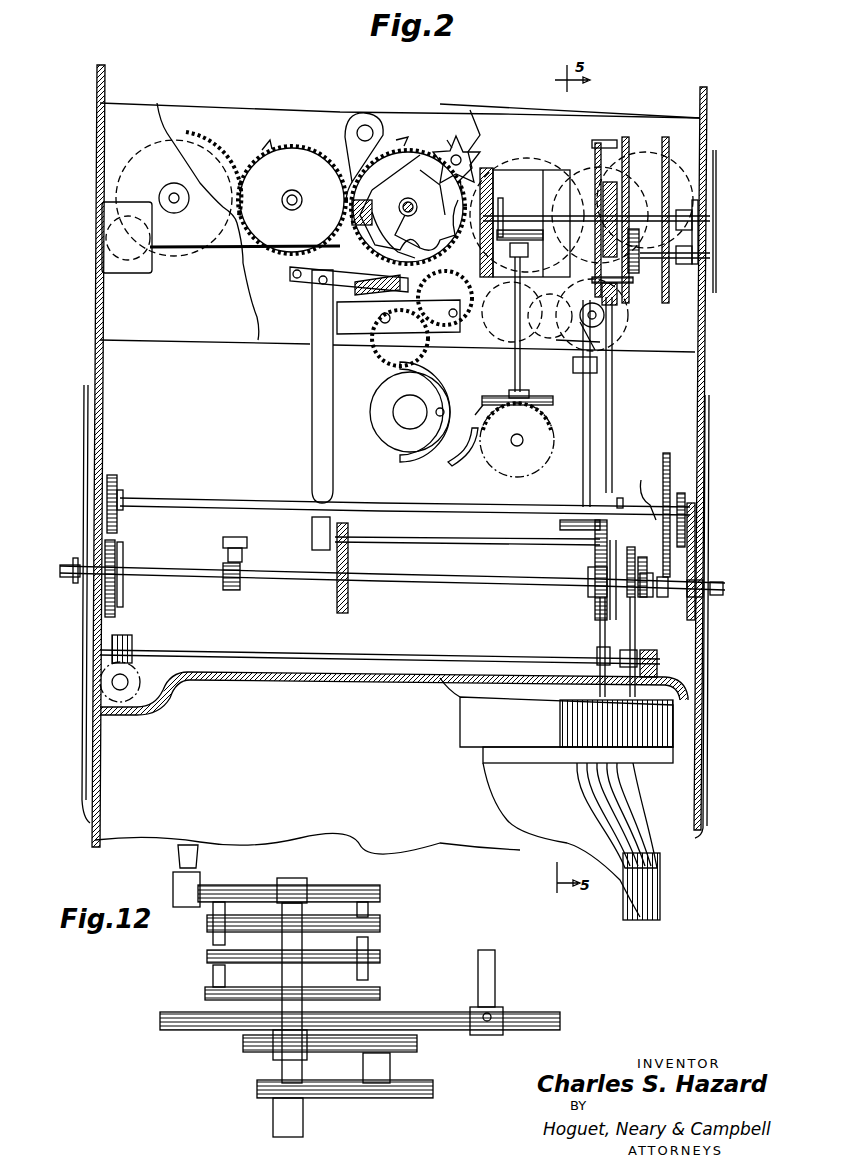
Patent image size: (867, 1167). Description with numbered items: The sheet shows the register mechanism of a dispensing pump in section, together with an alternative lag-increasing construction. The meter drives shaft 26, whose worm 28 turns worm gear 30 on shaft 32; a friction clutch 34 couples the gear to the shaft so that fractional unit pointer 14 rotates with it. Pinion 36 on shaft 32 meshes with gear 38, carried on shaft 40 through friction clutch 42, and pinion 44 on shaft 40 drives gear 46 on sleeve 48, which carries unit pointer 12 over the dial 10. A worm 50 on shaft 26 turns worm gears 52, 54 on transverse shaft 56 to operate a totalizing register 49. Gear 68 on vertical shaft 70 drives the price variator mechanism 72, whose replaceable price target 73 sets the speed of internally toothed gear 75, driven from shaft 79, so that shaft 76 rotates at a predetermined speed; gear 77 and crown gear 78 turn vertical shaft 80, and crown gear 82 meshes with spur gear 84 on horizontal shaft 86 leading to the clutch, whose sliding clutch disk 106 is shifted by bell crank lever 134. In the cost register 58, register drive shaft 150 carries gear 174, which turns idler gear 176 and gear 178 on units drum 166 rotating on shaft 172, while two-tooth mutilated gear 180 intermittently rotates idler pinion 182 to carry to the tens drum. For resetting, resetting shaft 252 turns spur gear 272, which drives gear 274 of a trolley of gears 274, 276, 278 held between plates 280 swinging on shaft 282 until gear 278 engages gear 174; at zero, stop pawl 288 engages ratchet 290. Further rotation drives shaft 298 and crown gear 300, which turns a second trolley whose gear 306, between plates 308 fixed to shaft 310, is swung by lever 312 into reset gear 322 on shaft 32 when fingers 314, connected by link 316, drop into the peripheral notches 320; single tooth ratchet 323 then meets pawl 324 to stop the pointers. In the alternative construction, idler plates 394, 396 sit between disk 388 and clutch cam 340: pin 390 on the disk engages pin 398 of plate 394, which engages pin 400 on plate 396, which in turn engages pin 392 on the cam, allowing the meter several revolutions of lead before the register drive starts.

In FIG. 2, the dial 10 is at (690, 686).
In FIG. 2, the unit pointer 12 is at (710, 500).
In FIG. 2, the fractional unit pointer 14 is at (710, 640).
In FIG. 2, the shaft 26 is at (636, 630).
In FIG. 2, the worm 28 is at (600, 630).
In FIG. 2, the worm gear 30 is at (630, 548).
In FIG. 2, the shaft 32 is at (440, 586).
In FIG. 2, the friction clutch 34 is at (643, 575).
In FIG. 2, the pinion 36 is at (652, 597).
In FIG. 2, the gear 38 is at (668, 456).
In FIG. 2, the shaft 40 is at (405, 505).
In FIG. 2, the friction clutch 42 is at (636, 491).
In FIG. 2, the pinion 44 is at (684, 495).
In FIG. 2, the gear 46 is at (695, 560).
In FIG. 2, the sleeve 48 is at (703, 586).
In FIG. 2, the register 49 is at (128, 690).
In FIG. 2, the worm 50 is at (658, 666).
In FIG. 2, the worm gear 52 is at (637, 655).
In FIG. 2, the worm gear 54 is at (140, 646).
In FIG. 2, the transverse shaft 56 is at (512, 655).
In FIG. 2, the cost register 58 is at (472, 112).
In FIG. 2, the gear 68 is at (605, 243).
In FIG. 2, the vertical shaft 70 is at (613, 415).
In FIG. 2, the price variator mechanism 72 is at (658, 186).
In FIG. 2, the price target 73 is at (716, 190).
In FIG. 2, the internally toothed gear 75 is at (612, 180).
In FIG. 2, the shaft 76 is at (525, 230).
In FIG. 2, the gear 77 is at (502, 200).
In FIG. 2, the crown gear 78 is at (597, 165).
In FIG. 2, the shaft 79 is at (670, 208).
In FIG. 2, the vertical shaft 80 is at (465, 436).
In FIG. 2, the crown gear 82 is at (582, 394).
In FIG. 2, the spur gear 84 is at (560, 445).
In FIG. 2, the horizontal shaft 86 is at (515, 448).
In FIG. 2, the clutch disk 106 is at (395, 430).
In FIG. 2, the bell crank lever 134 is at (458, 458).
In FIG. 2, the register drive shaft 150 is at (400, 195).
In FIG. 2, the units drum 166 is at (180, 124).
In FIG. 2, the shaft 172 is at (168, 198).
In FIG. 2, the gear 174 is at (398, 140).
In FIG. 2, the idler gear 176 is at (285, 150).
In FIG. 2, the gear 178 is at (208, 162).
In FIG. 2, the two tooth mutilated gear 180 is at (450, 132).
In FIG. 2, the idler pinion 182 is at (470, 148).
In FIG. 2, the resetting shaft 252 is at (600, 318).
In FIG. 2, the spur gear 272 is at (620, 333).
In FIG. 2, the gear 274 is at (520, 350).
In FIG. 2, the gear 276 is at (492, 345).
In FIG. 2, the gear 278 is at (385, 348).
In FIG. 2, the plates 280 is at (476, 328).
In FIG. 2, the shaft 282 is at (560, 386).
In FIG. 2, the stop pawl 288 is at (350, 125).
In FIG. 2, the ratchet 290 is at (350, 268).
In FIG. 2, the shaft 298 is at (583, 470).
In FIG. 2, the crown gear 300 is at (560, 527).
In FIG. 2, the gear 306 is at (610, 615).
In FIG. 2, the plates 308 is at (595, 600).
In FIG. 2, the shaft 310 is at (385, 546).
In FIG. 2, the lever 312 is at (322, 550).
In FIG. 2, the fingers 314 is at (352, 302).
In FIG. 2, the link 316 is at (312, 398).
In FIG. 2, the peripheral notch 320 is at (445, 283).
In FIG. 2, the reset gear 322 is at (588, 557).
In FIG. 2, the single tooth ratchet 323 is at (242, 575).
In FIG. 2, the pawl 324 is at (247, 552).
In FIG. 12, the clutch cam 340 is at (333, 885).
In FIG. 12, the disk 388 is at (205, 993).
In FIG. 12, the pin 390 is at (213, 977).
In FIG. 12, the pin 392 is at (370, 910).
In FIG. 12, the idler plate 394 is at (380, 956).
In FIG. 12, the idler plate 396 is at (380, 922).
In FIG. 12, the pin 398 is at (370, 976).
In FIG. 12, the pin 400 is at (213, 935).